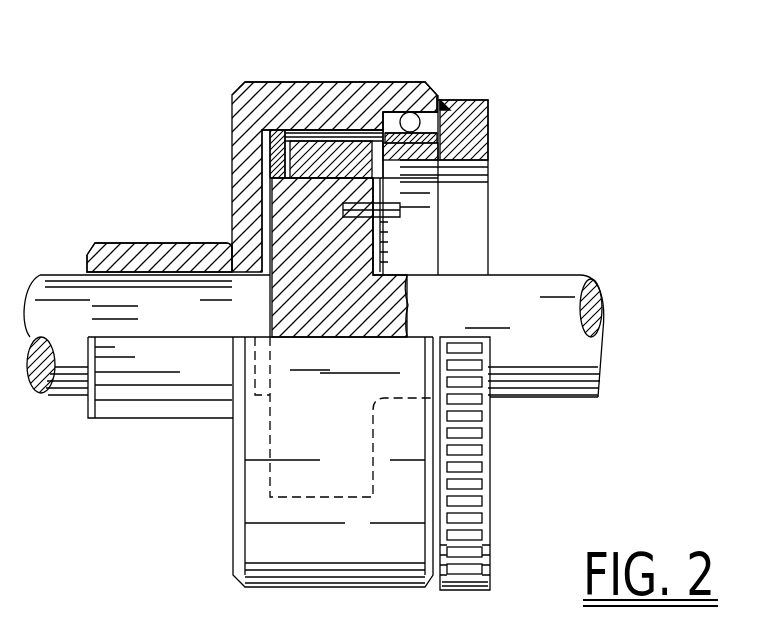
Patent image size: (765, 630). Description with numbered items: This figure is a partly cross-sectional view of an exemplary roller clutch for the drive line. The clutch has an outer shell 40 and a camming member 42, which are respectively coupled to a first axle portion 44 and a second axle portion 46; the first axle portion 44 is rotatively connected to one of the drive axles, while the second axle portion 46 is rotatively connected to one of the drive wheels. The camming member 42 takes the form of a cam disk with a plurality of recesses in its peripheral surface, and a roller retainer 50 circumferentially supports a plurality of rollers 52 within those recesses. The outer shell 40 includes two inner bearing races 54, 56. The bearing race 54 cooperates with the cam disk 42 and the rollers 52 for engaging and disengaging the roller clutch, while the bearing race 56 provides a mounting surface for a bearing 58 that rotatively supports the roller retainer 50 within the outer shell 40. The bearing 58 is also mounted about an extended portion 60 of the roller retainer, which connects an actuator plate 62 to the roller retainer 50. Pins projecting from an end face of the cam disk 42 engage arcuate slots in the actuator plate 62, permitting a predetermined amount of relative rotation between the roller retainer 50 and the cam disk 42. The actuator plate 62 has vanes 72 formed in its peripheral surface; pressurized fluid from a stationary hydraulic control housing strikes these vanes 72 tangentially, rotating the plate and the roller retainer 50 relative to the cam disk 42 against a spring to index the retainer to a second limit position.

The outer shell 40 is at (283, 82).
The camming member 42 is at (338, 243).
The first axle portion 44 is at (160, 243).
The second axle portion 46 is at (555, 336).
The roller retainer 50 is at (297, 148).
The rollers 52 is at (342, 138).
The inner bearing race 54 is at (266, 134).
The inner bearing race 56 is at (428, 108).
The bearing 58 is at (448, 104).
The extended portion 60 is at (427, 165).
The actuator plate 62 is at (483, 472).
The vanes 72 is at (460, 573).